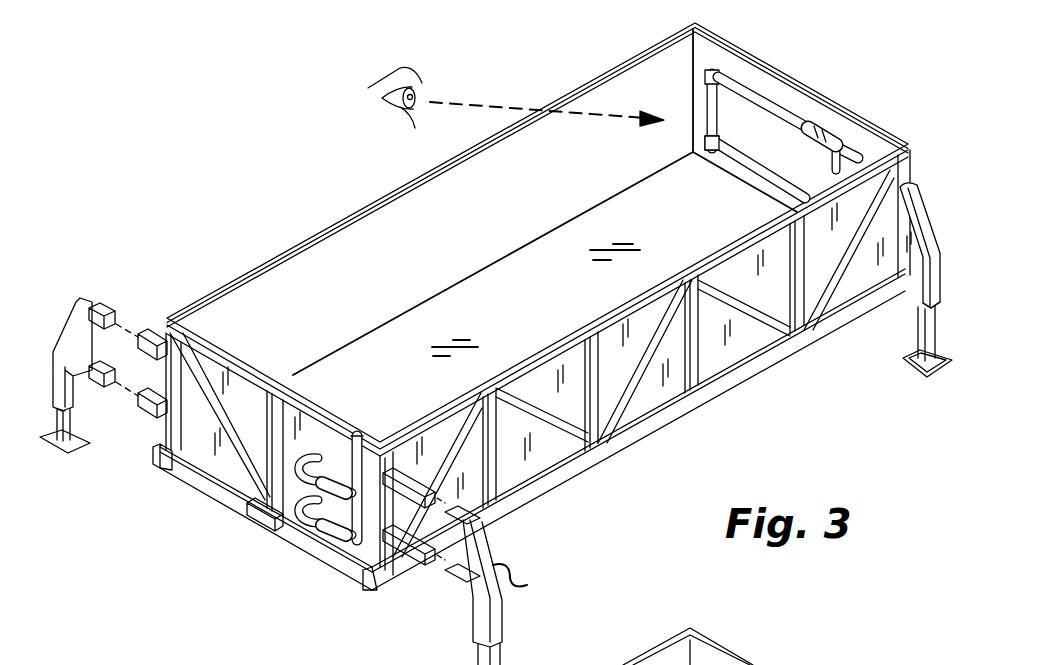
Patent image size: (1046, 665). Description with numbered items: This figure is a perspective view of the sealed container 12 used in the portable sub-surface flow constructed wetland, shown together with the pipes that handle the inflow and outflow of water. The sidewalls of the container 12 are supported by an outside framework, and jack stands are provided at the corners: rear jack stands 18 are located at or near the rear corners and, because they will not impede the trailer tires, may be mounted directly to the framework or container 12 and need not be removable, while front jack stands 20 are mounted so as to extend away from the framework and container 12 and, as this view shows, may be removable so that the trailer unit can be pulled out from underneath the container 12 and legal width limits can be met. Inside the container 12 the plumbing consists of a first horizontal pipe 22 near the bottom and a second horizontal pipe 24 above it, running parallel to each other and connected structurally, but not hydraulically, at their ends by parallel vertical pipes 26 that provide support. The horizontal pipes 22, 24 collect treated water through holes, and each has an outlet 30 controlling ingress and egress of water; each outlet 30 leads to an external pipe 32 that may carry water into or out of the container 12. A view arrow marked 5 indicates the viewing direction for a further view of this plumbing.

The sealed container 12 is at (283, 275).
The rear jack stand 18 is at (938, 207).
The front jack stand 20 is at (65, 320).
The first horizontal pipe 22 is at (727, 160).
The second horizontal pipe 24 is at (747, 80).
The vertical pipe 26 is at (687, 100).
The outlet 30 is at (310, 452).
The external pipe 32 is at (340, 440).
The view direction indicator 5 is at (516, 97).